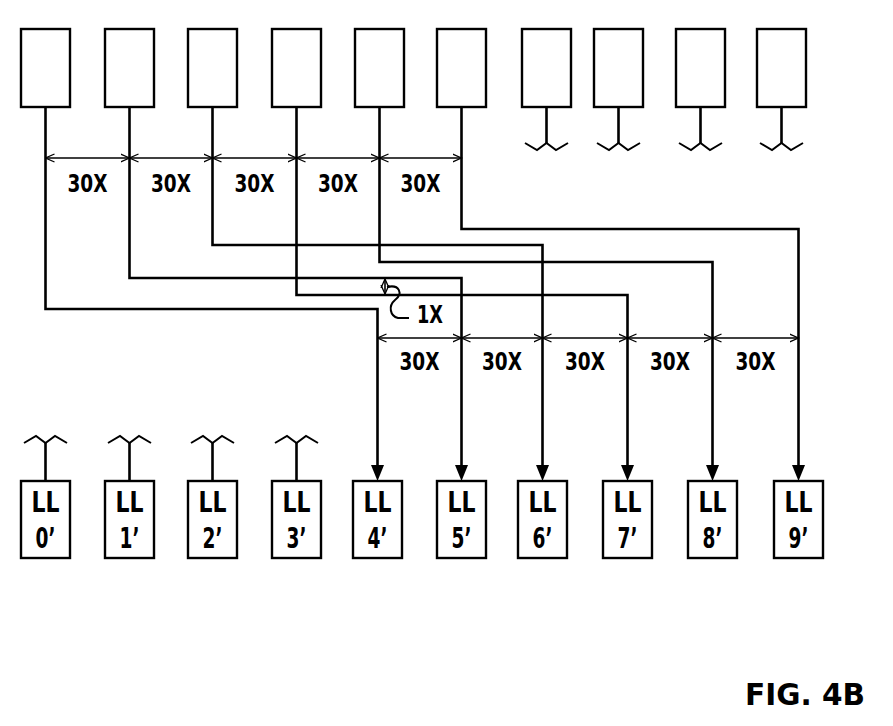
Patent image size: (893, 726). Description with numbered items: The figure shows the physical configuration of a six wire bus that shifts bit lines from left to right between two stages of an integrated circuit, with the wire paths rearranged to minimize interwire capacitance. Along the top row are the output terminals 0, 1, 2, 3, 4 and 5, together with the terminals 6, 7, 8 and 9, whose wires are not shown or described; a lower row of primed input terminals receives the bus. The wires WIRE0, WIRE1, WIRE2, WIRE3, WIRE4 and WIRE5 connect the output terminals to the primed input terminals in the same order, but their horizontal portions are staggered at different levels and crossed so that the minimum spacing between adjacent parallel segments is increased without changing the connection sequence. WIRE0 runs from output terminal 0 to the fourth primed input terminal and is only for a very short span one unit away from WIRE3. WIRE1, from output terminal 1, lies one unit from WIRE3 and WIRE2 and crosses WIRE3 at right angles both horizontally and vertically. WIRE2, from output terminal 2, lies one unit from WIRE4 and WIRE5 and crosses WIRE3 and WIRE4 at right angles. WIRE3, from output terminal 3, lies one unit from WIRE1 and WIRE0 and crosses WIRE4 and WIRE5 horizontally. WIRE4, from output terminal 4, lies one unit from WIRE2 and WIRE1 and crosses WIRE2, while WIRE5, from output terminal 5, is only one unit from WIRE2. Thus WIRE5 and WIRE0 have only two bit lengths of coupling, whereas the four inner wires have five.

The output terminal LL0 0 is at (45, 68).
The output terminal LL1 1 is at (129, 68).
The output terminal LL2 2 is at (212, 68).
The output terminal LL3 3 is at (296, 68).
The output terminal LL4 4 is at (379, 68).
The output terminal LL5 5 is at (461, 68).
The terminal LL6 6 is at (546, 68).
The terminal LL7 7 is at (618, 68).
The terminal LL8 8 is at (700, 68).
The terminal LL9 9 is at (781, 68).
The wire WIRE0 is at (215, 294).
The wire WIRE1 is at (299, 294).
The wire WIRE2 is at (381, 294).
The wire WIRE3 is at (466, 294).
The wire WIRE4 is at (550, 294).
The wire WIRE5 is at (634, 294).